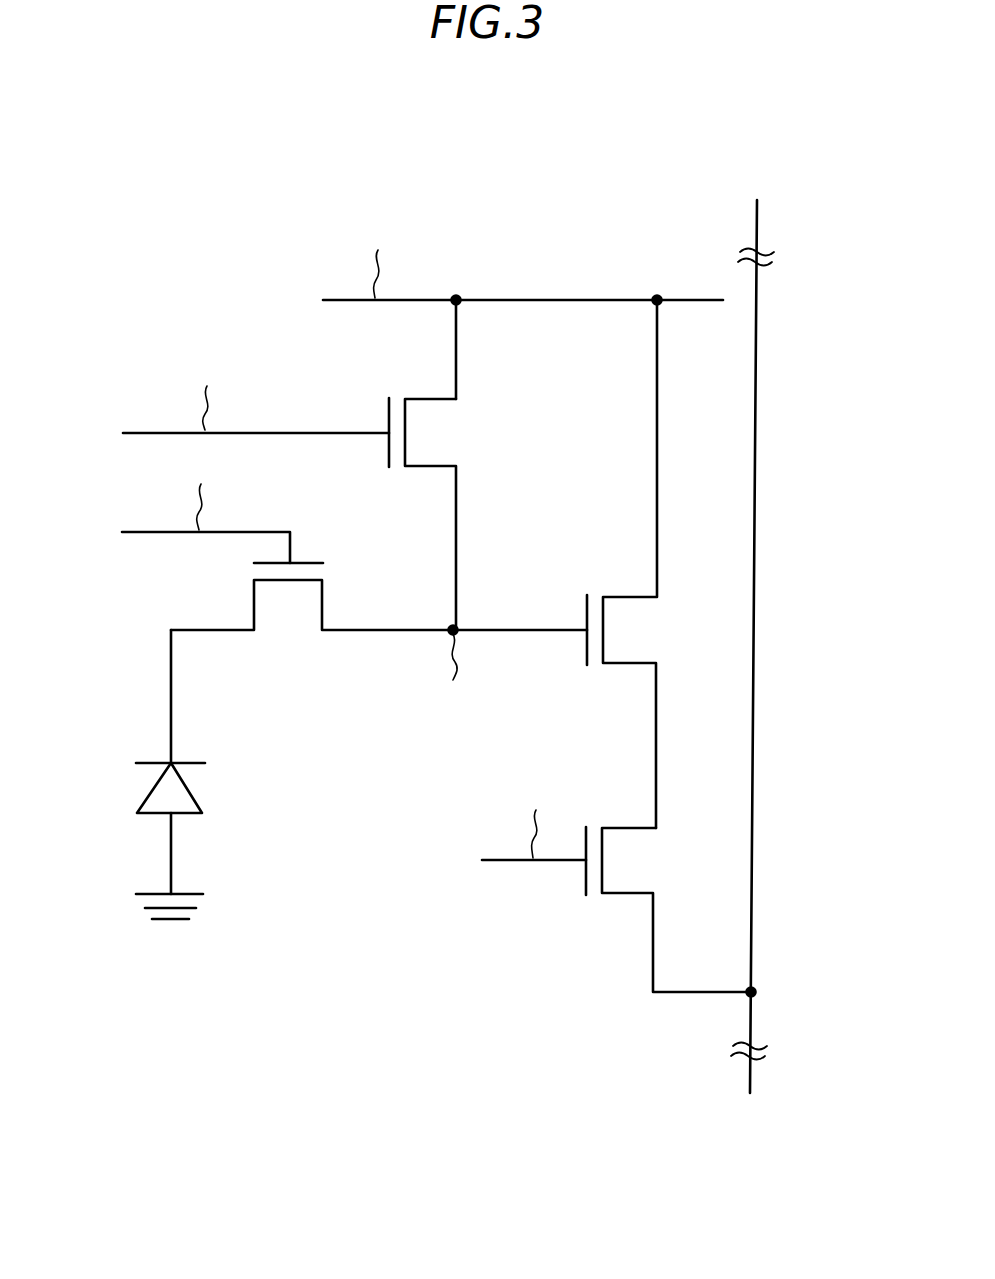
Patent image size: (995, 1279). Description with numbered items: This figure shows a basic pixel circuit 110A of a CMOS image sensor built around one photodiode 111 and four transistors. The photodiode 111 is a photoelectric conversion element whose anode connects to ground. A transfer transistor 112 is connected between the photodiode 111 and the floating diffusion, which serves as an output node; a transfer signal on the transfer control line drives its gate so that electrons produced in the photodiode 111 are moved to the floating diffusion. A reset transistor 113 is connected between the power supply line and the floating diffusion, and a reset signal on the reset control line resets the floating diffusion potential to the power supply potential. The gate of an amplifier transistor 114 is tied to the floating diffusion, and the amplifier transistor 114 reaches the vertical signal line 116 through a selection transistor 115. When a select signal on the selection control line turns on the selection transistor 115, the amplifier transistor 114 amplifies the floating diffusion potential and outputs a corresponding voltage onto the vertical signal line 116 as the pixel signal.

The pixel circuit 110A is at (226, 129).
The photodiode 111 is at (153, 783).
The transfer transistor 112 is at (296, 617).
The reset transistor 113 is at (440, 427).
The amplifier transistor 114 is at (620, 638).
The selection transistor 115 is at (618, 868).
The vertical signal line 116 is at (754, 752).